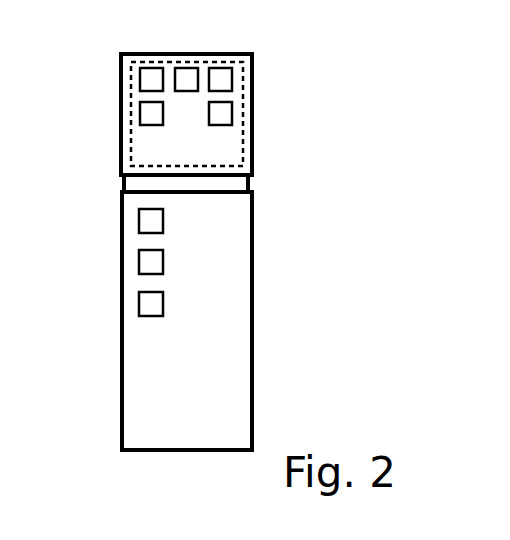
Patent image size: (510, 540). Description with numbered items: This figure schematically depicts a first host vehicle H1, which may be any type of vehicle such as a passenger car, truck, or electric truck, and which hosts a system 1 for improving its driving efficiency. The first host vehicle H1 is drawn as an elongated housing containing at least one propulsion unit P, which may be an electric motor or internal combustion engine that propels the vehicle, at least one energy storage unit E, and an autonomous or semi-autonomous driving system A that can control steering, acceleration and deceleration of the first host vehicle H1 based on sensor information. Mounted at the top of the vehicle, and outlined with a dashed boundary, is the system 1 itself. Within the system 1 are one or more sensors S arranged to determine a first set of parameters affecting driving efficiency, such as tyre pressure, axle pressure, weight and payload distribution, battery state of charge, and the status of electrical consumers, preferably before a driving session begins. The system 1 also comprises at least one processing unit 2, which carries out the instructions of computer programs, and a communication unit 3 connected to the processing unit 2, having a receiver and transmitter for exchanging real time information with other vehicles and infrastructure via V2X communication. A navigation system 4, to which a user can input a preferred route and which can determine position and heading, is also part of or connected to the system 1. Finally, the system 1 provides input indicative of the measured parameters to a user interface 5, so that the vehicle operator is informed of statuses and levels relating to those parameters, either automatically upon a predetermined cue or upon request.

The system 1 is at (245, 69).
The processing unit 2 is at (150, 68).
The communication unit 3 is at (185, 68).
The navigation system 4 is at (220, 68).
The user interface 5 is at (140, 112).
The sensor S is at (232, 115).
The first host vehicle H1 is at (273, 297).
The propulsion unit P is at (139, 220).
The energy storage unit E is at (139, 262).
The autonomous or semi-autonomous driving system A is at (139, 305).